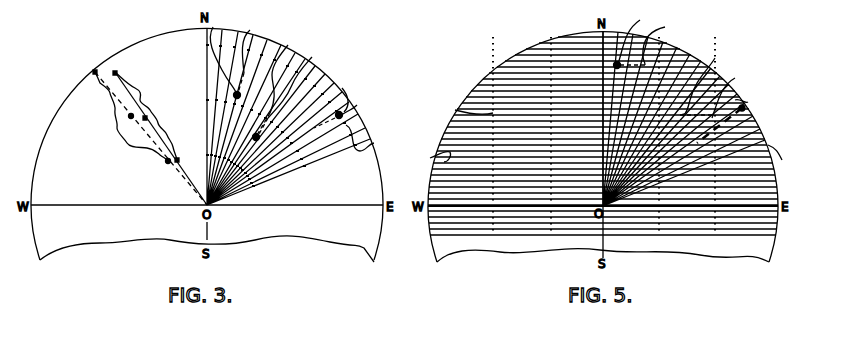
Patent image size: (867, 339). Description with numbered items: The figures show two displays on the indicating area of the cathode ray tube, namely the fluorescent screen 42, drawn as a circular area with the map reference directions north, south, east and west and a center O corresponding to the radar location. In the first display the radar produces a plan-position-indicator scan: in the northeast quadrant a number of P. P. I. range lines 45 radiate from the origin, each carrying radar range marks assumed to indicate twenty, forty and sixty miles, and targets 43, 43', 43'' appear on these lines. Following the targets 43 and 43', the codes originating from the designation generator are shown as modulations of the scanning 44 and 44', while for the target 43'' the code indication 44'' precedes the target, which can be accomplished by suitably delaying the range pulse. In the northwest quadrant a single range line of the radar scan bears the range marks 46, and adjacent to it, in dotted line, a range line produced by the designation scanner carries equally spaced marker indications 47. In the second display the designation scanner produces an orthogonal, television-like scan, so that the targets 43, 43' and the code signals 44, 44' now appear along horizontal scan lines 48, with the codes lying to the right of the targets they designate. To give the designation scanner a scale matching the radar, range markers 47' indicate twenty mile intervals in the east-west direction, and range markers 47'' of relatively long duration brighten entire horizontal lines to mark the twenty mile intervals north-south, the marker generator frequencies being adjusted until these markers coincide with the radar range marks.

In FIG. 3, the fluorescent screen 42 is at (166, 46).
In FIG. 5, the fluorescent screen 42 is at (470, 243).
In FIG. 3, the target 43 is at (228, 56).
In FIG. 5, the target 43 is at (627, 38).
In FIG. 3, the code indication 44 is at (257, 57).
In FIG. 5, the code indication 44 is at (651, 43).
In FIG. 3, the target 43' is at (281, 85).
In FIG. 5, the target 43' is at (708, 79).
In FIG. 3, the code indication 44' is at (297, 89).
In FIG. 5, the code indication 44' is at (736, 93).
In FIG. 3, the target 43'' is at (351, 93).
In FIG. 3, the code indication 44'' is at (351, 107).
In FIG. 3, the P. P. I. range lines 45 is at (370, 138).
In FIG. 5, the P. P. I. range lines 45 is at (782, 160).
In FIG. 3, the range marks 46 is at (146, 118).
In FIG. 5, the range marks 46 is at (744, 108).
In FIG. 3, the marker indications 47 is at (149, 137).
In FIG. 5, the range markers 47' is at (462, 107).
In FIG. 5, the range markers 47'' is at (428, 155).
In FIG. 5, the horizontal scan lines 48 is at (511, 220).